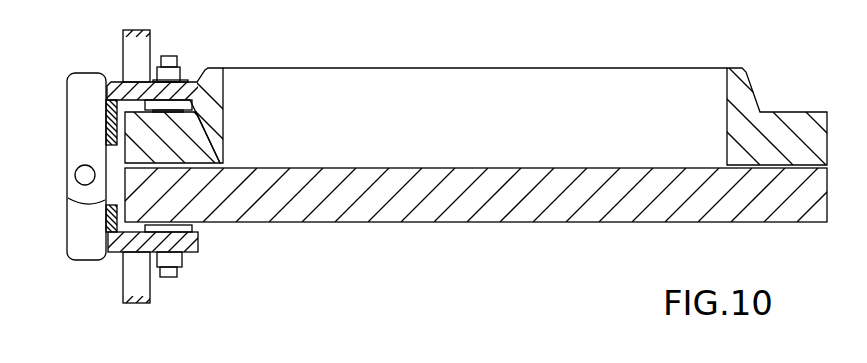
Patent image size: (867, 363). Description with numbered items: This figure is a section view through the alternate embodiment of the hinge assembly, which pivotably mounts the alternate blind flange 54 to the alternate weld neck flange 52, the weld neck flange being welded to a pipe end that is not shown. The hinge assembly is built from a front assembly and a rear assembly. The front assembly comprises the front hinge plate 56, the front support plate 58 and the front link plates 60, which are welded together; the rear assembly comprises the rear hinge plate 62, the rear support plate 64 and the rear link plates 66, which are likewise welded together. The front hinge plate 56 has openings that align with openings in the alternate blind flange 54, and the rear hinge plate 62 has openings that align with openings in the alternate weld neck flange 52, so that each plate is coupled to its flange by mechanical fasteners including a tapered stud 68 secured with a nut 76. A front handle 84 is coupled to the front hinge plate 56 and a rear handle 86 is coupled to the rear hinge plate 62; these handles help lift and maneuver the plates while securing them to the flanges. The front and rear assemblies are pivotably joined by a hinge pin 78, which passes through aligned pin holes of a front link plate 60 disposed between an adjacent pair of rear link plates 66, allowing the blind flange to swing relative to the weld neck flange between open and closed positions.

The alternate weld neck flange 52 is at (787, 111).
The alternate blind flange 54 is at (455, 222).
The front hinge plate 56 is at (198, 241).
The front support plate 58 is at (108, 207).
The front link plates 60 is at (92, 248).
The rear hinge plate 62 is at (194, 89).
The rear support plate 64 is at (128, 116).
The rear link plates 66 is at (95, 83).
The tapered stud 68 is at (168, 56).
The nut 76 is at (182, 73).
The hinge pin 78 is at (76, 178).
The front handle 84 is at (140, 304).
The rear handle 86 is at (142, 30).